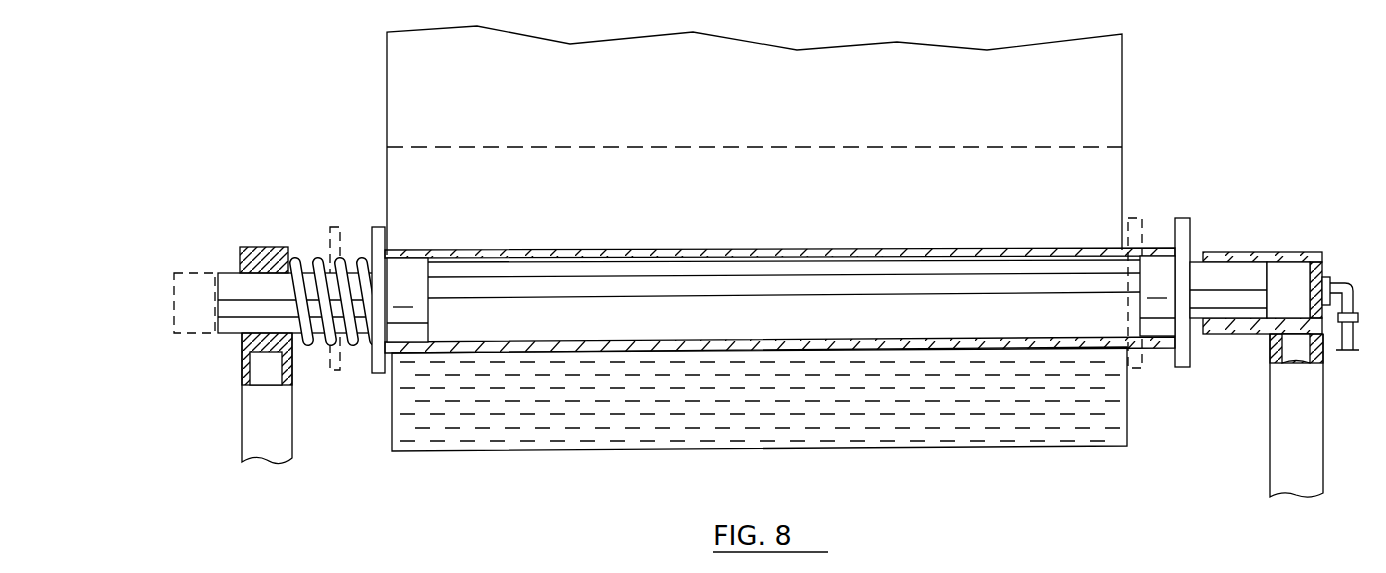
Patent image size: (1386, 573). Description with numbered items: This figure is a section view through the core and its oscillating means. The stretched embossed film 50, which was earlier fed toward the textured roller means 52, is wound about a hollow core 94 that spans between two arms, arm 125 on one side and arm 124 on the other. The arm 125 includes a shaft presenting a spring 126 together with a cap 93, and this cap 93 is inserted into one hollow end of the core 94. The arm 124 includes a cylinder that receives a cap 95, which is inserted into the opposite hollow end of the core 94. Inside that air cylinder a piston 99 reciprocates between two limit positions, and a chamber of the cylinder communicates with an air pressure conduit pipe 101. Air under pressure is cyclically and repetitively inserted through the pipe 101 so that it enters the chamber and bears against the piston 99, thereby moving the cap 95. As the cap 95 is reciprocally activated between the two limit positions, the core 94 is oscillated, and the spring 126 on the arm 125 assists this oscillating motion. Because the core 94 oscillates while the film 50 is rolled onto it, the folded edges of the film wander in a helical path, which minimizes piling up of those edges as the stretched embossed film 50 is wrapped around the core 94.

The stretchable plastic film 50 is at (1093, 98).
The textured roller means 52 is at (1020, 432).
The cap 93 is at (412, 275).
The hollow core 94 is at (525, 250).
The cap 95 is at (1150, 268).
The piston 99 is at (1243, 275).
The air pressure conduit pipe 101 is at (1346, 287).
The arm 124 is at (1288, 423).
The arm 125 is at (252, 434).
The spring 126 is at (305, 337).